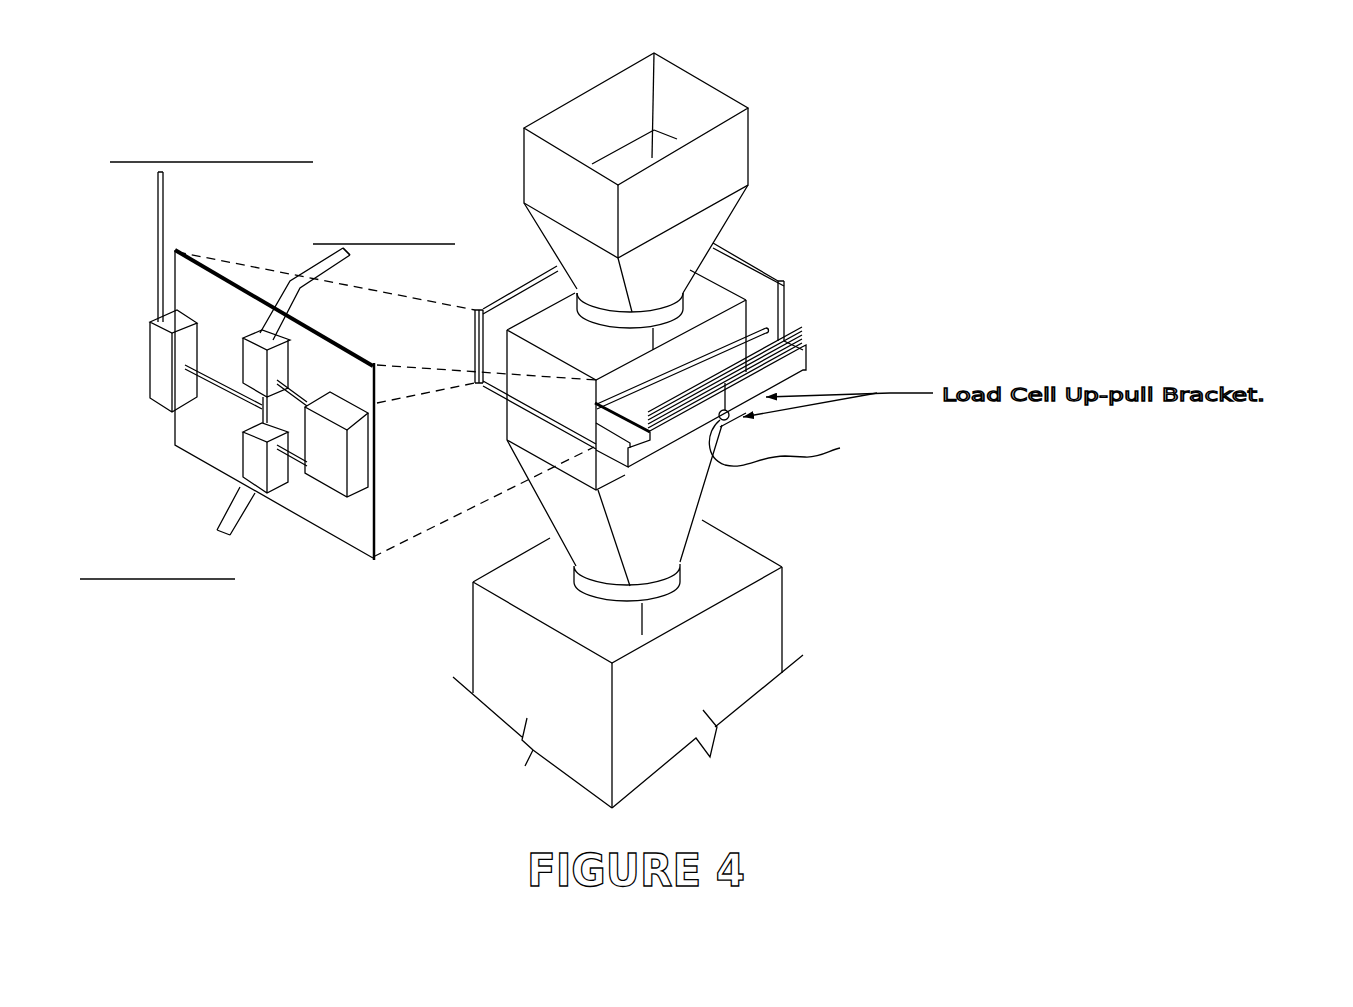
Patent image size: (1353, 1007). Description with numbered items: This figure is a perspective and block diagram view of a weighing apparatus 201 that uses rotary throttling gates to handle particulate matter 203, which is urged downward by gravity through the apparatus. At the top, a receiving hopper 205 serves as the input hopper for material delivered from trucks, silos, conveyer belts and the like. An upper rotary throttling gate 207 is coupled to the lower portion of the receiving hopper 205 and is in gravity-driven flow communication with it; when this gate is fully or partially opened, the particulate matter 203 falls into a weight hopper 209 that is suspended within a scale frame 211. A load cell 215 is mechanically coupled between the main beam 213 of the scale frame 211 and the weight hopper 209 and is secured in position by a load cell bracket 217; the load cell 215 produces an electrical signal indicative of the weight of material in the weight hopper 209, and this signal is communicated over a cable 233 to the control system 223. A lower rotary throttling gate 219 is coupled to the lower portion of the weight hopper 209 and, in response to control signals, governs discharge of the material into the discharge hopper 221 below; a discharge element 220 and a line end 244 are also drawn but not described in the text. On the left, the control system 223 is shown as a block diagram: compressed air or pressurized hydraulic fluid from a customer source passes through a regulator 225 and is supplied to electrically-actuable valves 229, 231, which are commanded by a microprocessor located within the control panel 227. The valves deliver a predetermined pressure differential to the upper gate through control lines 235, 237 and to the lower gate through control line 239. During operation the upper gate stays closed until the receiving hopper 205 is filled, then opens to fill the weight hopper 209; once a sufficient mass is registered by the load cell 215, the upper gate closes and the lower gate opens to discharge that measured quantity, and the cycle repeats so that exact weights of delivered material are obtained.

The weighing apparatus 201 is at (452, 140).
The particulate matter 203 is at (478, 66).
The receiving hopper 205 is at (759, 145).
The upper rotary throttling gate 207 is at (695, 286).
The weight hopper 209 is at (891, 420).
The scale frame 211 is at (787, 269).
The main beam 213 is at (805, 344).
The load cell 215 is at (740, 402).
The load cell bracket 217 is at (772, 395).
The lower rotary throttling gate 219 is at (706, 570).
The weigh hopper discharge 220 is at (702, 514).
The discharge hopper 221 is at (771, 631).
The control system 223 is at (150, 458).
The regulator 225 is at (150, 393).
The control panel 227 is at (305, 470).
The electrically-actuable valve 229 is at (240, 347).
The electrically-actuable valve 231 is at (240, 467).
The cable 233 is at (168, 631).
The control line 235 is at (300, 260).
The control line 237 is at (352, 256).
The control line 239 is at (233, 514).
The line end to weigh hopper gate cylinder 244 is at (240, 527).